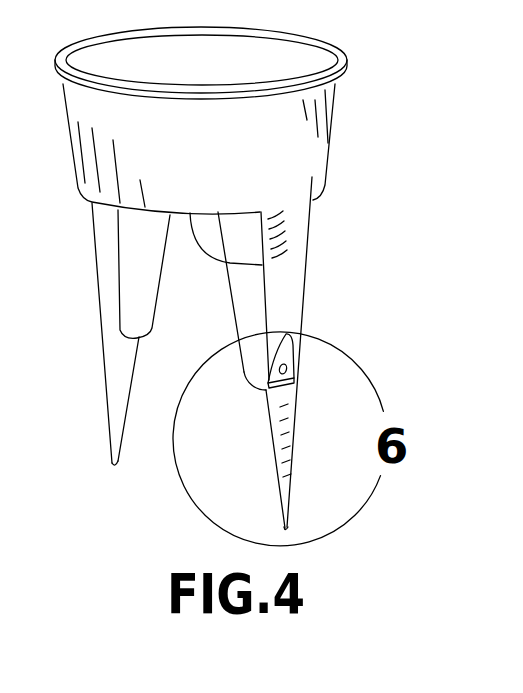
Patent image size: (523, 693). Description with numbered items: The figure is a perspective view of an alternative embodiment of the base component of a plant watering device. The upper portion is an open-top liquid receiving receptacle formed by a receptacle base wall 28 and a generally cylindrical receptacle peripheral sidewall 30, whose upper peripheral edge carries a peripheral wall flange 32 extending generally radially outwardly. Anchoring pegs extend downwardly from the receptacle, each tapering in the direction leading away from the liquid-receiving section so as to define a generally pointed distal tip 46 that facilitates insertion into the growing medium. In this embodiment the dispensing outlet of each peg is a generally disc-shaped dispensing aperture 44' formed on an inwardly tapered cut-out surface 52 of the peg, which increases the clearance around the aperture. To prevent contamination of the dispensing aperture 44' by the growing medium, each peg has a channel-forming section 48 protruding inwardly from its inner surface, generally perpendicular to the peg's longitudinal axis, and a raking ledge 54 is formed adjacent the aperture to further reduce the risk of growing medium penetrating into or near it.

The peripheral wall flange 32 is at (345, 55).
The receptacle peripheral sidewall 30 is at (242, 142).
The receptacle base wall 28 is at (262, 265).
The channel-forming section 48 is at (143, 311).
The dispensing aperture 44' is at (332, 432).
The pointed distal tip 46 is at (110, 459).
The inwardly tapered cut-out surface 52 is at (287, 345).
The raking ledge 54 is at (293, 377).